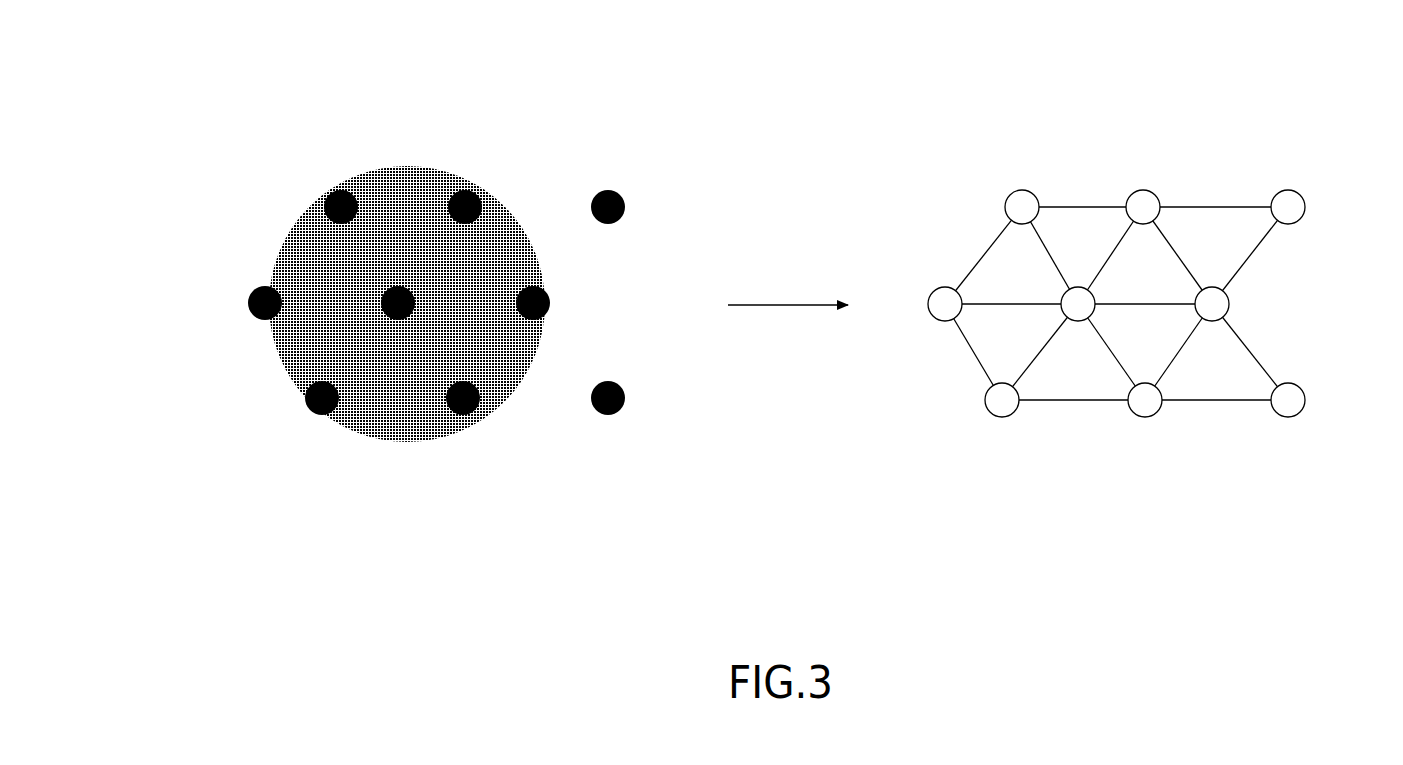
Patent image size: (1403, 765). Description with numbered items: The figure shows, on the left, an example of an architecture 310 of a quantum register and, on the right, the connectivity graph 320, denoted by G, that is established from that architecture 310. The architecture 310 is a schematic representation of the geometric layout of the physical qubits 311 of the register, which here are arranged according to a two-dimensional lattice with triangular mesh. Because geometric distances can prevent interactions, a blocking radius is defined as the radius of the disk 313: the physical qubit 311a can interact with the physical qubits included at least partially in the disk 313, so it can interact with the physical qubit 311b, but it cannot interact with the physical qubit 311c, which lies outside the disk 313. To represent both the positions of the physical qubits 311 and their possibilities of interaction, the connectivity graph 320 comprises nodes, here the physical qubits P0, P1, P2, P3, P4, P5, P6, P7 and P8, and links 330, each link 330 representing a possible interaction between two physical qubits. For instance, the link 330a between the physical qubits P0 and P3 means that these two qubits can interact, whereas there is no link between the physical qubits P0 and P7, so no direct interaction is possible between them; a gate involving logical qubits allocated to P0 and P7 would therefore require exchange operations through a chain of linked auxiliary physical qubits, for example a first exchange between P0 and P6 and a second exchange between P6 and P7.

The architecture 310 is at (226, 72).
The physical qubits 311 is at (613, 189).
The physical qubit 311a is at (382, 302).
The physical qubit 311b is at (248, 299).
The physical qubit 311c is at (610, 417).
The disk 313 is at (400, 440).
The connectivity graph 320 is at (947, 69).
The links 330 is at (1085, 343).
The link 330a is at (1002, 306).
The physical qubit P0 is at (1063, 295).
The physical qubit P1 is at (1028, 189).
The physical qubit P2 is at (1152, 190).
The physical qubit P3 is at (930, 298).
The physical qubit P4 is at (1232, 310).
The physical qubit P5 is at (989, 411).
The physical qubit P6 is at (1150, 417).
The physical qubit P7 is at (1302, 384).
The physical qubit P8 is at (1295, 190).
The connectivity graph G is at (1341, 284).